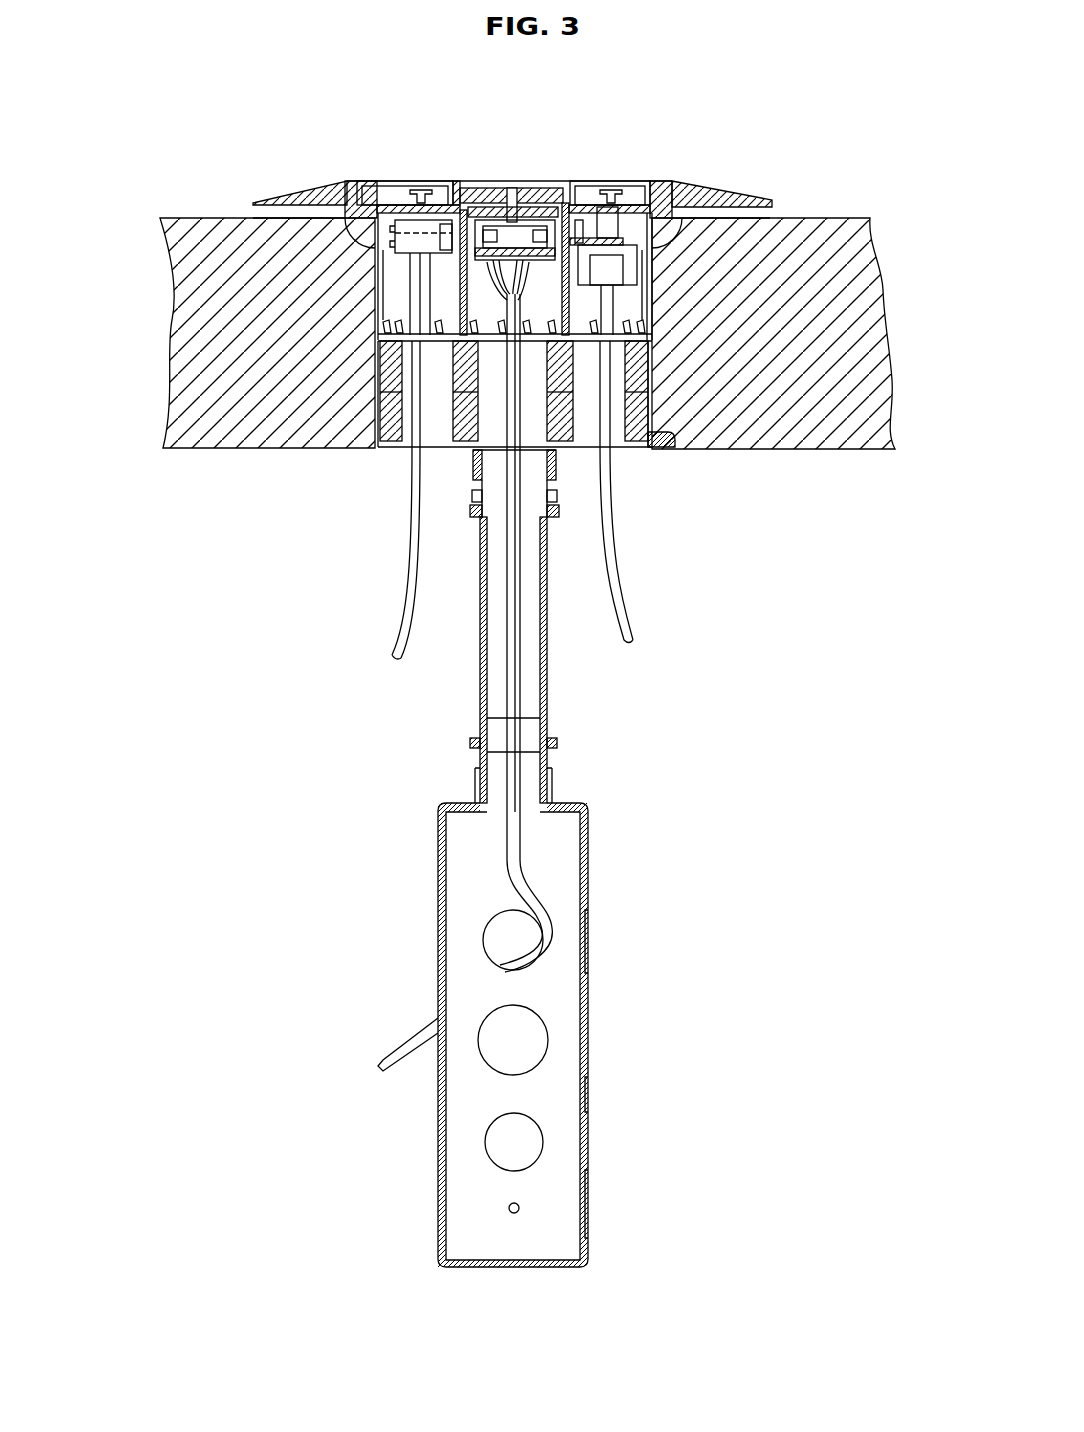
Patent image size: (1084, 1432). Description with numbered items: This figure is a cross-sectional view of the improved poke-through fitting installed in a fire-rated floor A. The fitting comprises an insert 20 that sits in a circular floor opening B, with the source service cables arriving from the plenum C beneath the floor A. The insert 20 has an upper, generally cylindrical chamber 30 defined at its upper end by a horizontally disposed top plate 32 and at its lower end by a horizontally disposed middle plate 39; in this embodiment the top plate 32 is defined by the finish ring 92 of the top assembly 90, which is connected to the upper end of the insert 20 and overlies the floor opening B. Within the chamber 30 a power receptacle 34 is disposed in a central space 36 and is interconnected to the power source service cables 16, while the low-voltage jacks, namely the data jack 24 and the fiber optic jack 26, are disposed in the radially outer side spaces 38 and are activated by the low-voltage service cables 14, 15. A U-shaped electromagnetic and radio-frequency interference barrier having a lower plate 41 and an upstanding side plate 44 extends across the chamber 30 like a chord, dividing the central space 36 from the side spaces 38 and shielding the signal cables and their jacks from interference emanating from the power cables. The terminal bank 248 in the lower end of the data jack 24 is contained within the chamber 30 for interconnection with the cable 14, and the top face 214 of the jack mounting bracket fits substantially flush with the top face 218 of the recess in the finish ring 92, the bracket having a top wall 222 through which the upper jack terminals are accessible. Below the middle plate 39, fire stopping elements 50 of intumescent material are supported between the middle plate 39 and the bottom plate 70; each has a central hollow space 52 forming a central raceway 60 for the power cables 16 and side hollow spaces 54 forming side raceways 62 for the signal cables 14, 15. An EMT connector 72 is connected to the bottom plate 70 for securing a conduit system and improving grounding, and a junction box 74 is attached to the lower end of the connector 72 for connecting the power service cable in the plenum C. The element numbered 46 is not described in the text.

The floor A is at (848, 262).
The floor opening B is at (680, 240).
The plenum C is at (563, 780).
The low-voltage service cable 14 is at (407, 633).
The low-voltage service cable 15 is at (615, 580).
The power source service cable 16 is at (515, 689).
The insert 20 is at (400, 392).
The RJ-45 category 5 jack 24 is at (352, 212).
The fiber optic jack 26 is at (627, 220).
The upper chamber 30 is at (386, 284).
The top plate 32 is at (385, 213).
The power receptacle 34 is at (520, 227).
The central space 36 is at (553, 302).
The side space 38 is at (383, 243).
The middle plate 39 is at (428, 343).
The lower plate 41 is at (555, 367).
The side plate 44 is at (383, 396).
The flange plate 46 is at (572, 313).
The fire stopping element 50 is at (668, 440).
The central hollow space 52 is at (457, 450).
The side hollow space 54 is at (479, 444).
The central raceway 60 is at (513, 391).
The side raceway 62 is at (390, 447).
The bottom plate 70 is at (388, 452).
The EMT connector 72 is at (482, 700).
The junction box 74 is at (588, 862).
The top assembly 90 is at (543, 168).
The finish ring 92 is at (733, 195).
The top face 214 is at (414, 192).
The top face 218 is at (645, 213).
The top wall 222 is at (583, 270).
The terminal bank 248 is at (383, 260).